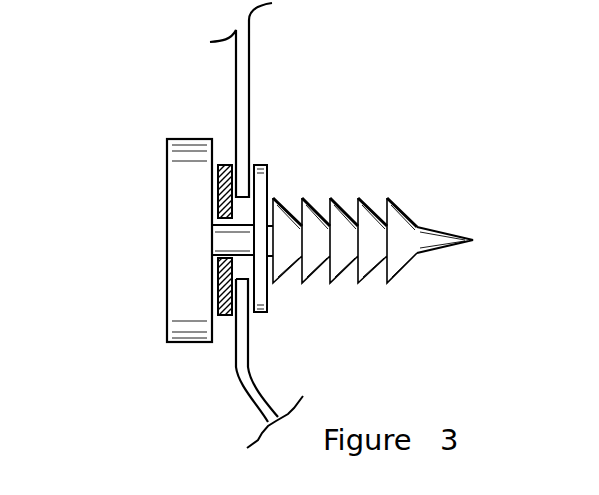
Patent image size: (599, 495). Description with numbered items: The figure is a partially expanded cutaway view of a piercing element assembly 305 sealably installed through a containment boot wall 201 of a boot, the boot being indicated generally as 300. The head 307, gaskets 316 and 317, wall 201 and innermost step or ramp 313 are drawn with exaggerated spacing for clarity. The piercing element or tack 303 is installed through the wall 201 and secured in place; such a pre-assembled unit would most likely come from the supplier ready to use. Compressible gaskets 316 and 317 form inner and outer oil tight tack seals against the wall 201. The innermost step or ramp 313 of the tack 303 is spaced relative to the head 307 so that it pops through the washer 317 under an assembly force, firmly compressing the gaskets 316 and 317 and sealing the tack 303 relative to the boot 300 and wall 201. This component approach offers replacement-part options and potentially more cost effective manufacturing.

The wall 201 is at (242, 62).
The fastener assembly 300 is at (500, 4).
The piercing element 303 is at (400, 263).
The assembly 305 is at (138, 180).
The head 307 is at (182, 270).
The innermost step or ramp 313 is at (287, 222).
The compressible gasket 316 is at (220, 165).
The compressible gasket (washer) 317 is at (264, 182).